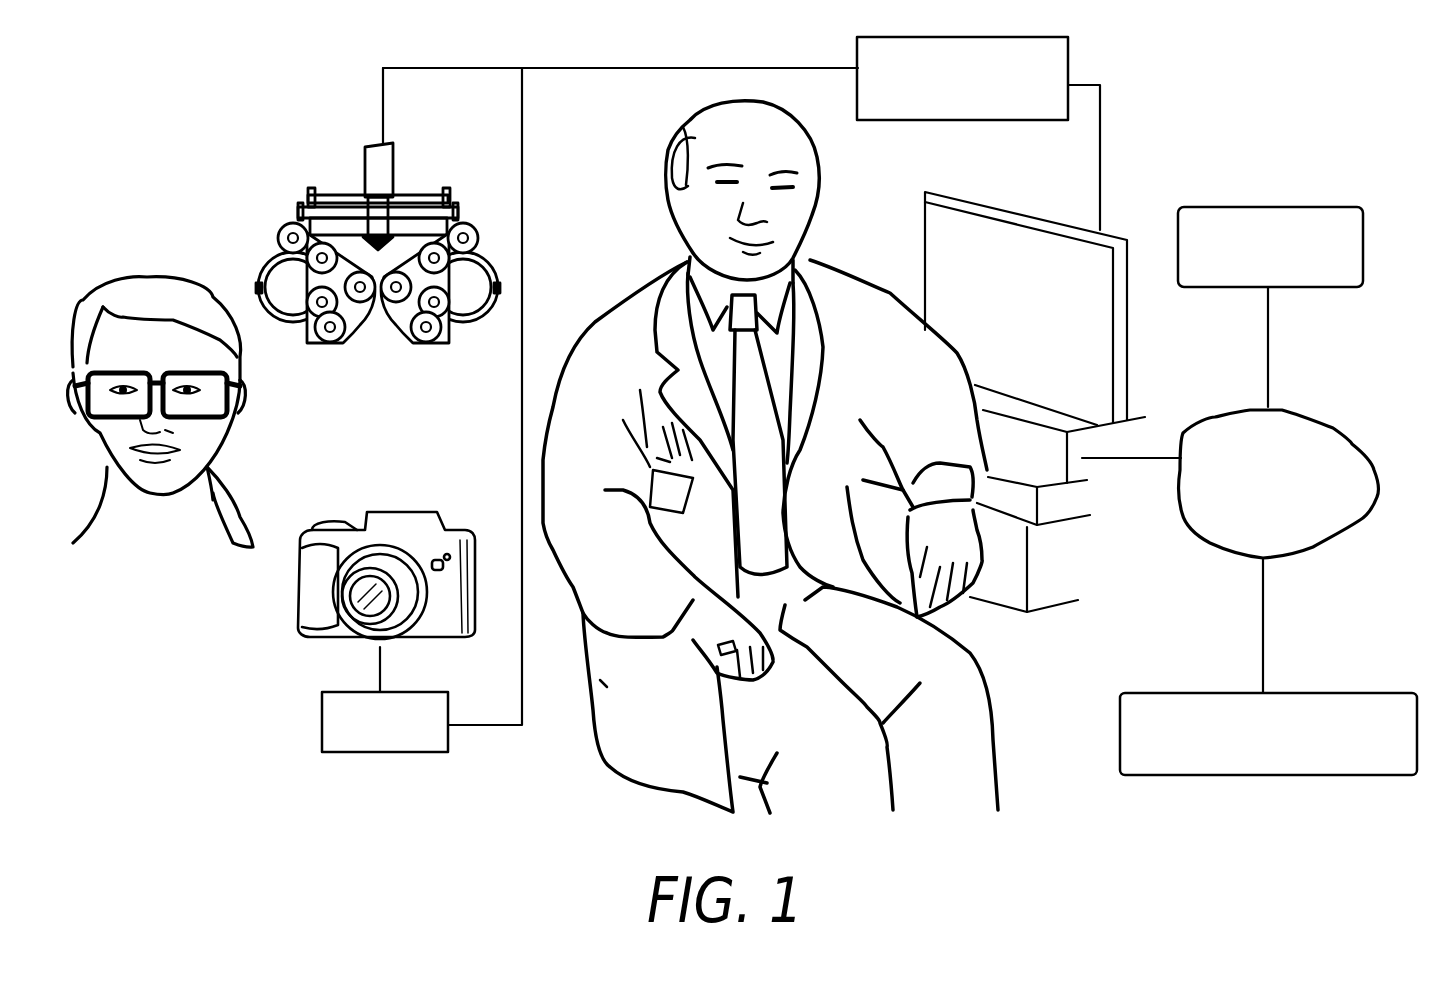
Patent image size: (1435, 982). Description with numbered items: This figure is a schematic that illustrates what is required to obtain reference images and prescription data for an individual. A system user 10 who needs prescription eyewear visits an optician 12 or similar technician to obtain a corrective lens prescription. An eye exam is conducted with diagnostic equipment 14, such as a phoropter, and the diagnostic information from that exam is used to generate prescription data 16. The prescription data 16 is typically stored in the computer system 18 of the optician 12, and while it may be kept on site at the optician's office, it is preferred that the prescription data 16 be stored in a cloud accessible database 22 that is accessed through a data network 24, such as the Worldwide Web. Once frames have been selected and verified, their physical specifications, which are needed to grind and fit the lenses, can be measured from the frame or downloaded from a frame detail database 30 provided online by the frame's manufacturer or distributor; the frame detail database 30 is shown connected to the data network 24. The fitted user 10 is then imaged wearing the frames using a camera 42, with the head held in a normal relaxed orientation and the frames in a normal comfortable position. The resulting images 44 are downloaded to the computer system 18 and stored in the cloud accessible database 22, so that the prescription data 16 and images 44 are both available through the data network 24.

The system user 10 is at (197, 280).
The optician 12 is at (655, 183).
The diagnostic equipment 14 is at (418, 193).
The prescription data 16 is at (1068, 58).
The computer system 18 is at (1067, 222).
The cloud accessible database 22 is at (1352, 693).
The data network 24 is at (1340, 432).
The frame detail database 30 is at (1330, 207).
The camera 42 is at (440, 520).
The images 44 is at (405, 753).